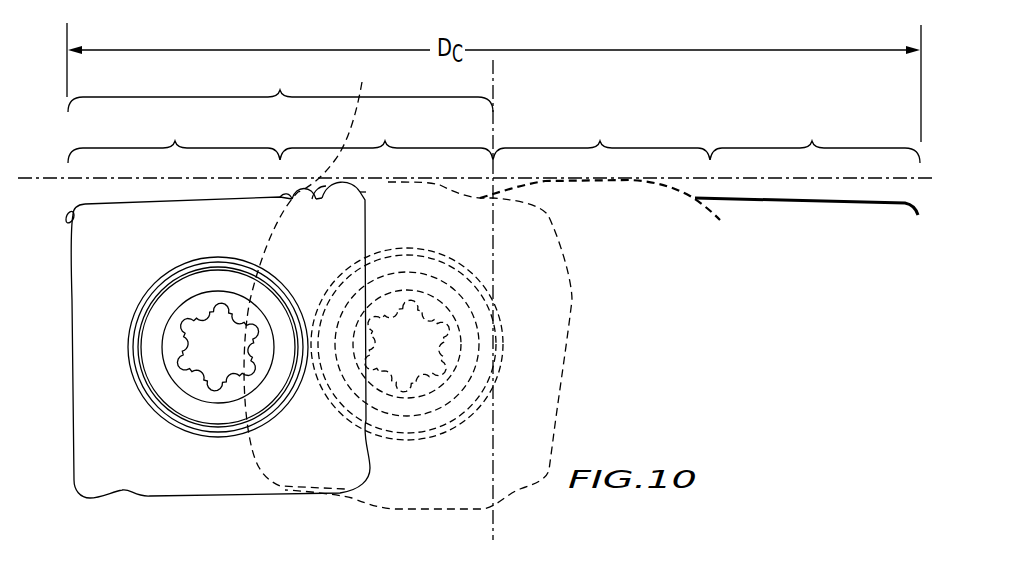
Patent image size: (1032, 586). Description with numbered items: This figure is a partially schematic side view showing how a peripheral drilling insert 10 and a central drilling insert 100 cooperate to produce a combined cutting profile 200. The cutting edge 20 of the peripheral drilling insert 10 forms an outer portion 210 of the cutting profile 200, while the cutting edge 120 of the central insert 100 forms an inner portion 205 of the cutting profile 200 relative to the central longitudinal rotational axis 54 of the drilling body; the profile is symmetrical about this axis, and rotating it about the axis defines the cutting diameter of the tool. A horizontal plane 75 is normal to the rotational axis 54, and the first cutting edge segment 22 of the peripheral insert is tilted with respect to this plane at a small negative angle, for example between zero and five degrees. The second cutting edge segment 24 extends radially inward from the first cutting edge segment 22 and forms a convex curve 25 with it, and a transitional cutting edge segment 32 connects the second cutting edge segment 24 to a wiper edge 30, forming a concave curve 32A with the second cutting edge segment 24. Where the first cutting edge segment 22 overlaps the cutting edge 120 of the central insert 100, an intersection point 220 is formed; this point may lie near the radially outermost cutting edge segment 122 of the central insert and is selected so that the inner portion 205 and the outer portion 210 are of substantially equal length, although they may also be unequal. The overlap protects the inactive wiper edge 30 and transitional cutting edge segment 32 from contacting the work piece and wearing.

The peripheral drilling insert 10 is at (63, 316).
The cutting edge 20 is at (146, 204).
The first cutting edge segment 22 is at (196, 198).
The second cutting edge segment 24 is at (301, 203).
The convex curve 25 is at (286, 198).
The wiper edge 30 is at (70, 210).
The transitional cutting edge segment 32 is at (336, 197).
The concave curve 32A is at (318, 202).
The central longitudinal rotational axis 54 is at (496, 66).
The horizontal plane 75 is at (48, 178).
The central drilling insert 100 is at (563, 303).
The cutting edge of the central insert 120 is at (386, 182).
The radially outermost cutting edge segment 122 is at (311, 272).
The cutting profile 200 is at (280, 88).
The inner portion 205 is at (495, 136).
The outer portion 210 is at (494, 138).
The intersection point 220 is at (282, 194).